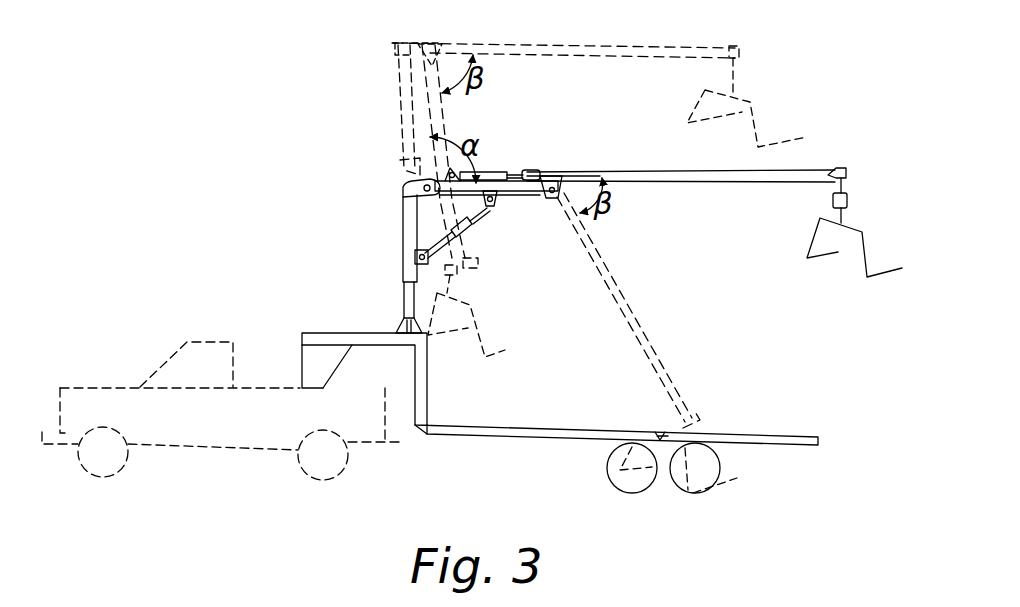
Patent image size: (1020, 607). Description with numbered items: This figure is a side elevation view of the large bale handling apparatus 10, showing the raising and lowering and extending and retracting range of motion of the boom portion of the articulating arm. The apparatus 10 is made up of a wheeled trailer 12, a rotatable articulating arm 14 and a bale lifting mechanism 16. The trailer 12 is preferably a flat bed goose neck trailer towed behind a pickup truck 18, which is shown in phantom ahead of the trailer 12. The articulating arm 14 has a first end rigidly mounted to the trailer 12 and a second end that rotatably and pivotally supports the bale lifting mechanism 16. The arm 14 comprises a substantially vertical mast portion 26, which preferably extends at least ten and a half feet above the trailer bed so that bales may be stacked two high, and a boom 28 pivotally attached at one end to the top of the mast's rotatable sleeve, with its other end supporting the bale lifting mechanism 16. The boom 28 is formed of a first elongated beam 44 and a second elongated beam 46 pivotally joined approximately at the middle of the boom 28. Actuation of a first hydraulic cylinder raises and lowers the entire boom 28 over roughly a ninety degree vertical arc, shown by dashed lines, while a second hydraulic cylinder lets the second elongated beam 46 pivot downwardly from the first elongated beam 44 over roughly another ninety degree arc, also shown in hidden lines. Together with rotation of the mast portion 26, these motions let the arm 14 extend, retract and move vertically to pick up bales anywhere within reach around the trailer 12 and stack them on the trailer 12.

The large bale handling apparatus 10 is at (834, 134).
The wheeled trailer 12 is at (756, 432).
The rotatable articulating arm 14 is at (378, 190).
The bale lifting mechanism 16 is at (757, 93).
The pickup truck 18 is at (160, 352).
The vertical mast portion 26 is at (398, 278).
The boom 28 is at (380, 64).
The first elongated beam 44 is at (412, 97).
The second elongated beam 46 is at (612, 46).